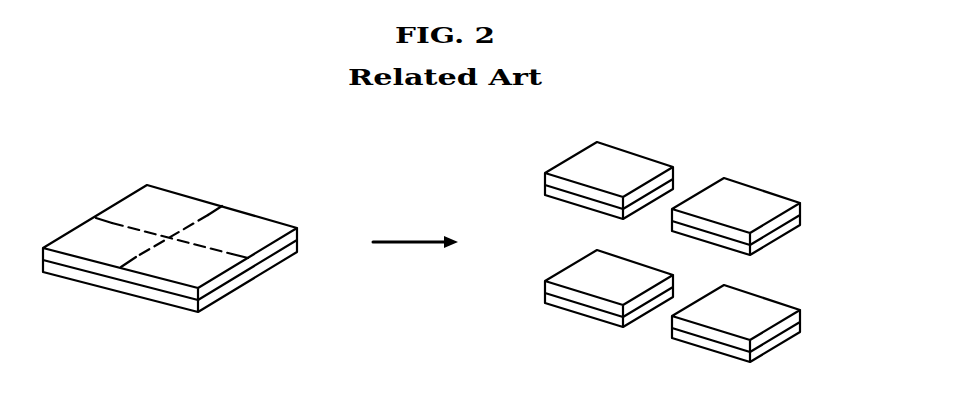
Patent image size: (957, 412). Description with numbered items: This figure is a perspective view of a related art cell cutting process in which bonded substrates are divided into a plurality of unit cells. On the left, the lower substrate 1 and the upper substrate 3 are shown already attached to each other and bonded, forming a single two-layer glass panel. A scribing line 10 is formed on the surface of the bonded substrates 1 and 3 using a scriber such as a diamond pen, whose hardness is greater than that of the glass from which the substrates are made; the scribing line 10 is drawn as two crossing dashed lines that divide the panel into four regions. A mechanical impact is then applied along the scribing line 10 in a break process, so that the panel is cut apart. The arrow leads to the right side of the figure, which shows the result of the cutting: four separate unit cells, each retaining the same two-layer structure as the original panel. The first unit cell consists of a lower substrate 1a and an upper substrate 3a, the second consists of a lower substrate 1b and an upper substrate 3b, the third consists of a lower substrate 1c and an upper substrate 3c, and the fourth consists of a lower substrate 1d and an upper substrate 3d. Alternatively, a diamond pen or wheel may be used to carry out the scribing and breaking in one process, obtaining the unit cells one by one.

The lower substrate 1 is at (300, 249).
The upper substrate 3 is at (300, 232).
The scribing line 10 is at (207, 212).
The lower substrate of unit cell 1a is at (545, 195).
The upper substrate of unit cell 3a is at (545, 178).
The lower substrate of unit cell 1b is at (800, 217).
The upper substrate of unit cell 3b is at (800, 207).
The lower substrate of unit cell 1c is at (545, 303).
The upper substrate of unit cell 3c is at (545, 286).
The lower substrate of unit cell 1d is at (800, 324).
The upper substrate of unit cell 3d is at (800, 314).